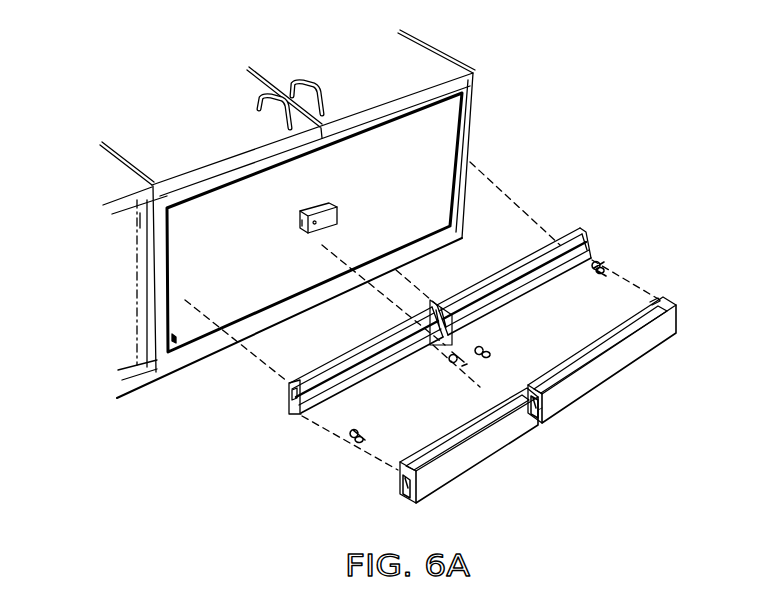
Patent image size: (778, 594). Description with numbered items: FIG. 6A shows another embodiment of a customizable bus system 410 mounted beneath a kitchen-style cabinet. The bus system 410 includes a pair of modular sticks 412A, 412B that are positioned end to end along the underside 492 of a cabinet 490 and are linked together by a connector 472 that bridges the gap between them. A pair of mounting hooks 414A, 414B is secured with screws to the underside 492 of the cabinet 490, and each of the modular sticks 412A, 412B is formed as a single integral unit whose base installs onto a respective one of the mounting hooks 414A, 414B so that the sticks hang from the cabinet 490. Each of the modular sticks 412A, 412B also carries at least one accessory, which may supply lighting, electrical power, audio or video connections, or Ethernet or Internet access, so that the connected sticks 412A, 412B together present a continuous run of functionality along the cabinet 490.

The bus system 410 is at (612, 201).
The modular stick 412A is at (458, 462).
The modular stick 412B is at (588, 375).
The mounting hook 414A is at (293, 410).
The mounting hook 414B is at (512, 263).
The connector 472 is at (559, 444).
The cabinet 490 is at (413, 67).
The underside 492 is at (187, 322).